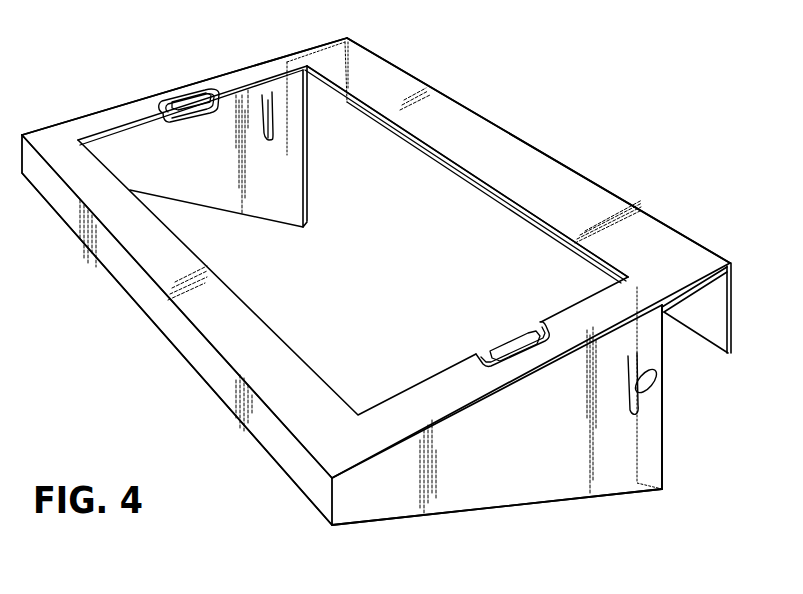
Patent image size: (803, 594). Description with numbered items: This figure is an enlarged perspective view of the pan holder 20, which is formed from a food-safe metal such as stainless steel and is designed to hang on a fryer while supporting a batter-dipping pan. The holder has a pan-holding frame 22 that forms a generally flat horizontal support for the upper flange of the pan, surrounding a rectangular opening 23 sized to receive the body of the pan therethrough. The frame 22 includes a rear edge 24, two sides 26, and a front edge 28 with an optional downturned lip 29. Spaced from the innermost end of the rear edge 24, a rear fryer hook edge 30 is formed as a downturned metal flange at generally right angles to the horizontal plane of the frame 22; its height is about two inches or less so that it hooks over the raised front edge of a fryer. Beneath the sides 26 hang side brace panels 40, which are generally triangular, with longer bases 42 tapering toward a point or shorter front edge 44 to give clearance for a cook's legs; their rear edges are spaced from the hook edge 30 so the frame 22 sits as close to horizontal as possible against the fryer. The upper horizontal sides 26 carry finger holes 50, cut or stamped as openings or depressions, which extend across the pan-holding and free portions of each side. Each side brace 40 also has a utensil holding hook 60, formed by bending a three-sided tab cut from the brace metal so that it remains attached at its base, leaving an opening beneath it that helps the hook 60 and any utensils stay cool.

The pan holder 20 is at (540, 82).
The pan-holding frame 22 is at (206, 315).
The opening 23 is at (180, 240).
The rear edge 24 is at (565, 195).
The sides 26 is at (133, 115).
The front edge 28 is at (250, 365).
The downturned lip 29 is at (277, 443).
The rear fryer hook edge 30 is at (706, 307).
The side brace panel 40 is at (215, 122).
The longer base 42 is at (665, 448).
The shorter front edge 44 is at (332, 497).
The finger hole 50 is at (193, 108).
The utensil holding hook 60 is at (268, 97).